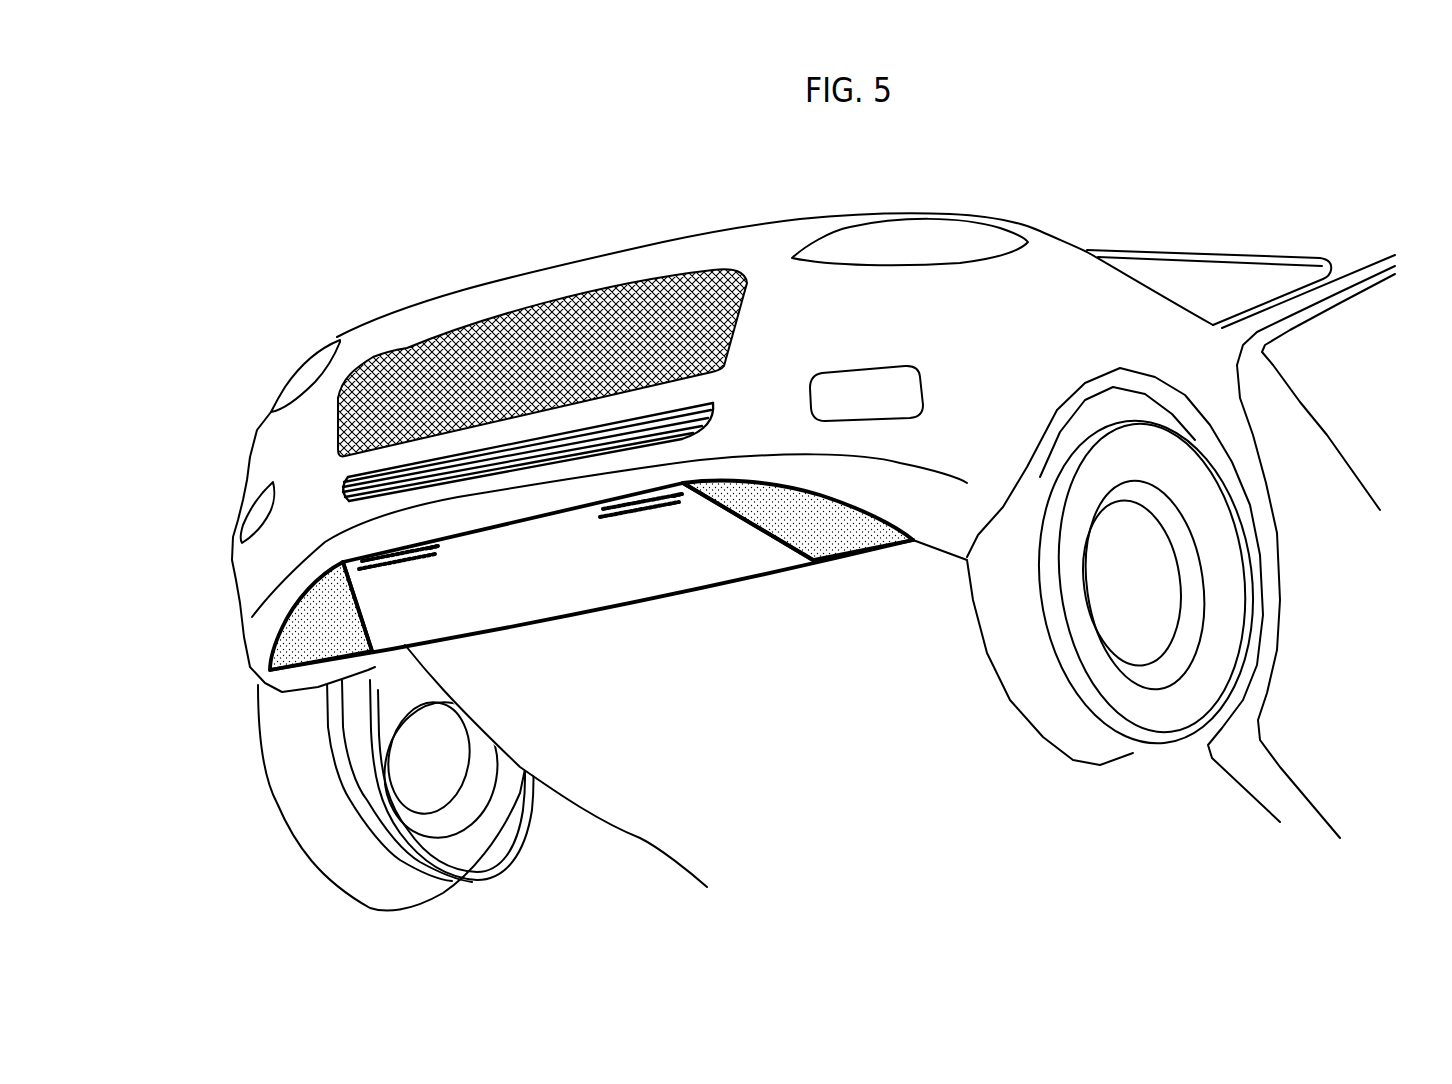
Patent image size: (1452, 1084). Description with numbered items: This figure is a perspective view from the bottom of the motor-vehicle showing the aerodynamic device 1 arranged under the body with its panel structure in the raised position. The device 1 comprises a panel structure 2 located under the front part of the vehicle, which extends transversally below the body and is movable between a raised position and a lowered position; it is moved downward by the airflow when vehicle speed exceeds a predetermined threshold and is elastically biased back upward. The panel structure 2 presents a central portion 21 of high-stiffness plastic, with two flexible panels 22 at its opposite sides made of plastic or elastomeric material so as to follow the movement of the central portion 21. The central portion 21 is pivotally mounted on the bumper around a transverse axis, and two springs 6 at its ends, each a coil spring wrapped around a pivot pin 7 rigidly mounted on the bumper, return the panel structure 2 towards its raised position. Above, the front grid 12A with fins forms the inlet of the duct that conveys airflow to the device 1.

The aerodynamic device 1 is at (546, 610).
The panel structure 2 is at (715, 588).
The central portion 21 is at (512, 610).
The flexible panels 22 is at (290, 638).
The springs 6 is at (362, 568).
The pivot pin 7 is at (438, 549).
The motor-vehicle front grid 12A is at (706, 411).